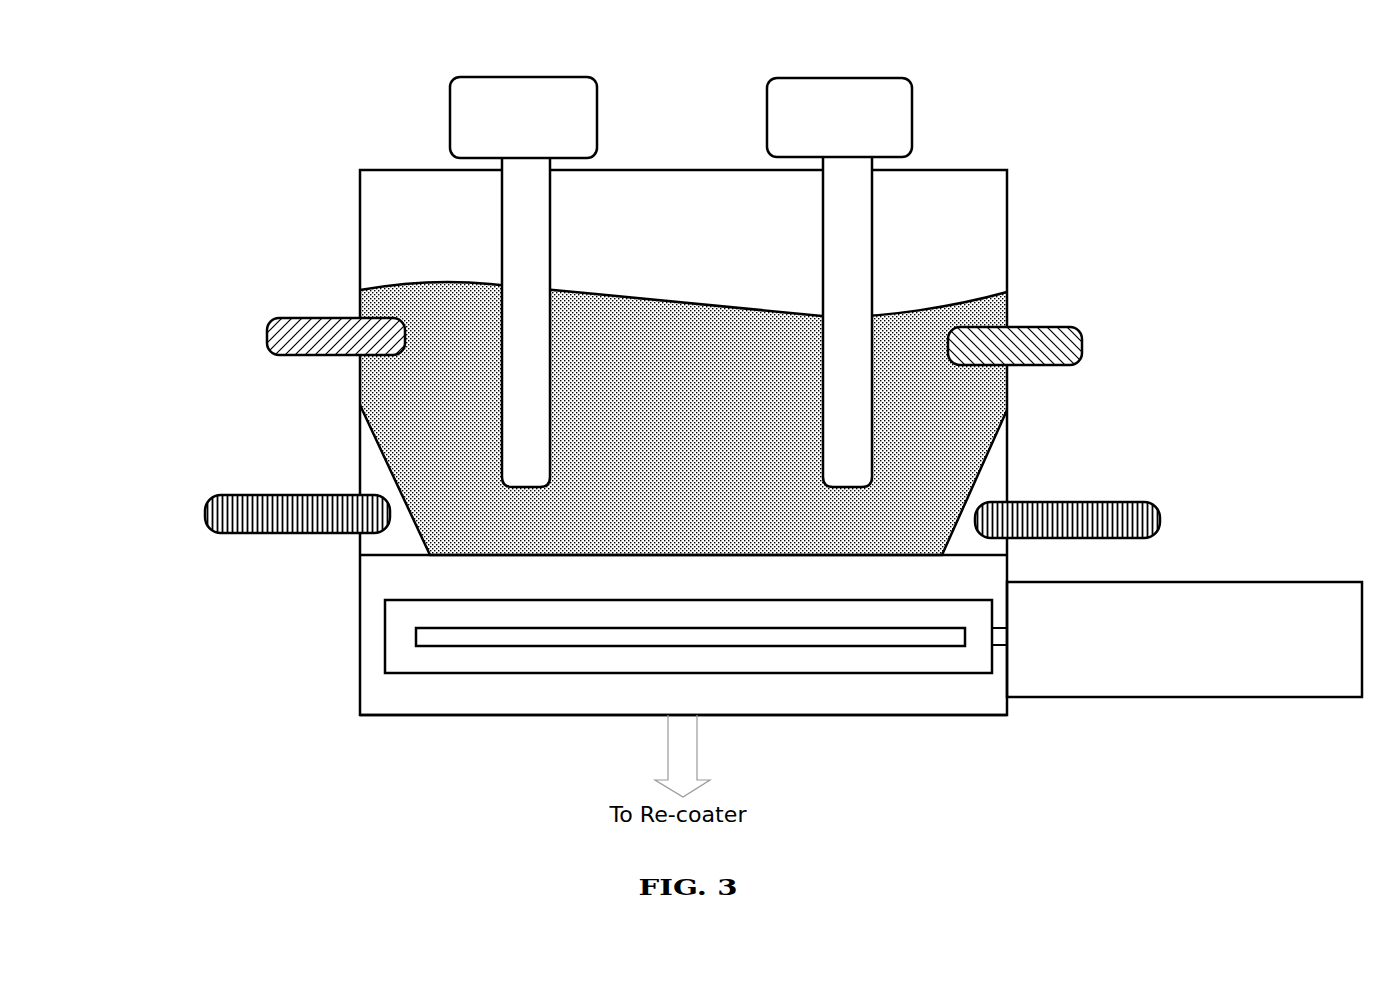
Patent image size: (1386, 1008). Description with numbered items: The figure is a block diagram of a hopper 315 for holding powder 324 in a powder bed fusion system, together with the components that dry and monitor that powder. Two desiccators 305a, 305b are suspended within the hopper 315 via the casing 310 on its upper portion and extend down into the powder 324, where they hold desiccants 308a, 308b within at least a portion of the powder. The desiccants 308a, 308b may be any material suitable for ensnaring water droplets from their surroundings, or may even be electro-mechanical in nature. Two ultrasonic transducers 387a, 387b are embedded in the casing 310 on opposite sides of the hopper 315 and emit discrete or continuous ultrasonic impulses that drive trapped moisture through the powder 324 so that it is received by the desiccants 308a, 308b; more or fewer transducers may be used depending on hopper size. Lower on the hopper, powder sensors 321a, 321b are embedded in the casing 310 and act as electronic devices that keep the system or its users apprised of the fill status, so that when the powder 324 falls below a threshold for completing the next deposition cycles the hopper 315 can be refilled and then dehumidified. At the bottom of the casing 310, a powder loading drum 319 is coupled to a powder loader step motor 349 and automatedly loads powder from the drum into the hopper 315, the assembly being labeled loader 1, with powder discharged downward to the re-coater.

The hopper 315 is at (222, 95).
The casing 310 is at (963, 175).
The powder 324 is at (673, 471).
The desiccant 308a is at (520, 249).
The desiccant 308b is at (853, 249).
The desiccator 305a is at (523, 282).
The desiccator 305b is at (839, 282).
The ultrasonic transducer 387a is at (267, 335).
The ultrasonic transducer 387b is at (1082, 345).
The powder sensor 321a is at (205, 513).
The powder sensor 321b is at (1160, 516).
The powder loading drum 319 is at (828, 667).
The powder loader step motor 349 is at (1347, 651).
The loader 1 is at (876, 720).